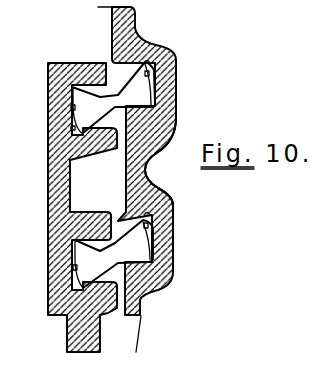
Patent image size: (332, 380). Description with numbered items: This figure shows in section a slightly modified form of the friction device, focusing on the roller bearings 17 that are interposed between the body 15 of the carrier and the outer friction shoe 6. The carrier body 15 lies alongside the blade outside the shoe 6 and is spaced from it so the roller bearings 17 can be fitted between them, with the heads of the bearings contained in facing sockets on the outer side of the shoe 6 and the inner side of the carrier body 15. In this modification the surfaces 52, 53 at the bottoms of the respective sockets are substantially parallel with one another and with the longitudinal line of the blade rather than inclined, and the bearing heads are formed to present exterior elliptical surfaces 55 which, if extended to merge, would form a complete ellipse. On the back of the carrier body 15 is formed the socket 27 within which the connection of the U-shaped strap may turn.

The friction shoe 6 is at (51, 63).
The body of the carrier 15 is at (143, 292).
The roller bearing 17 is at (128, 90).
The socket 27 is at (165, 161).
The socket bottom surface 52 is at (72, 128).
The socket bottom surface 53 is at (157, 63).
The elliptical surface 55 is at (71, 108).